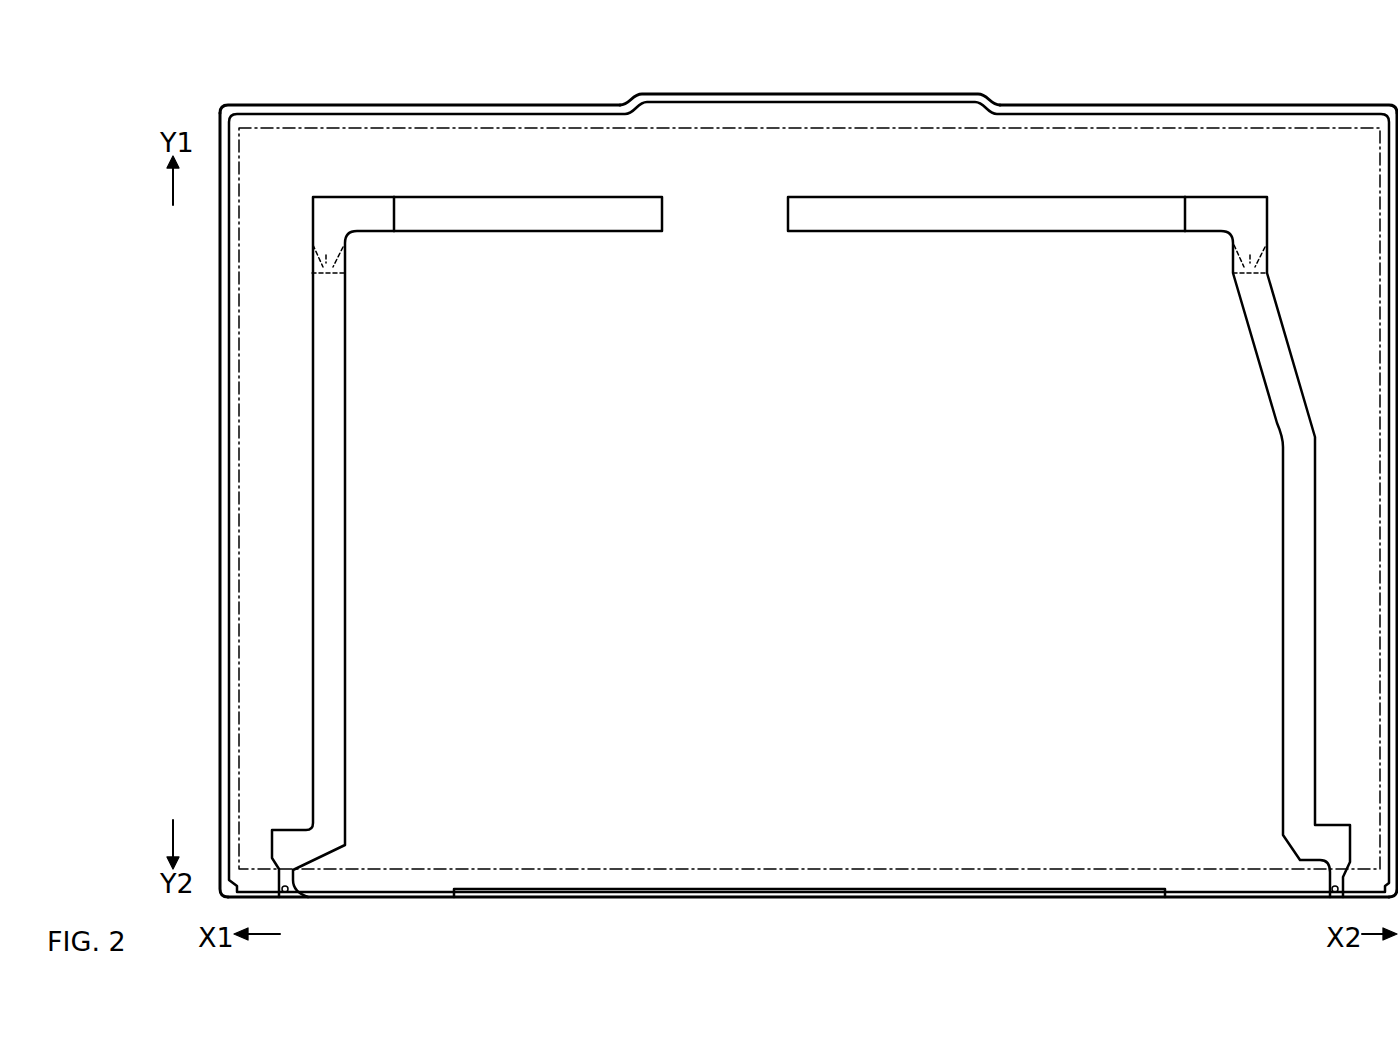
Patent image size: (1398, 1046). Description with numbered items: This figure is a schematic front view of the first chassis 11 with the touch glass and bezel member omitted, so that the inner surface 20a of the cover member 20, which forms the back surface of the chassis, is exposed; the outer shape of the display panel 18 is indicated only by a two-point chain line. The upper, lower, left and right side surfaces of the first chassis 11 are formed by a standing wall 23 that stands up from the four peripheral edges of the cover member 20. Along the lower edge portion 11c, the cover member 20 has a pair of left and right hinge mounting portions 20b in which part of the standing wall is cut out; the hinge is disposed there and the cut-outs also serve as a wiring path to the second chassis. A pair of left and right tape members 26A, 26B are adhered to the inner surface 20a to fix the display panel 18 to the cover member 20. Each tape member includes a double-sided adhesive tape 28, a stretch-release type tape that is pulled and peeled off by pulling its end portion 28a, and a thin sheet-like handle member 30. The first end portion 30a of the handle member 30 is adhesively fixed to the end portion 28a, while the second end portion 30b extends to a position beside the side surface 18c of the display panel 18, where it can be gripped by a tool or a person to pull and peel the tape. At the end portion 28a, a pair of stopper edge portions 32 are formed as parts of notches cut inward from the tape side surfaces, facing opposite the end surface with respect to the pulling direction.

The first chassis 11 is at (188, 98).
The lower edge portion 11c is at (617, 899).
The display panel 18 is at (512, 133).
The side surface of display panel 18c is at (503, 872).
The cover member 20 is at (808, 499).
The inner surface of cover member 20a is at (432, 165).
The hinge mounting portion 20b is at (422, 887).
The standing wall 23 is at (773, 527).
The tape member 26A is at (622, 245).
The tape member 26B is at (830, 245).
The double-sided adhesive tape 28 is at (789, 253).
The end portion of double-sided adhesive tape 28a is at (348, 265).
The handle member 30 is at (801, 549).
The first end portion of handle member 30a is at (332, 212).
The second end portion of handle member 30b is at (288, 877).
The stopper edge portion 32 is at (312, 266).